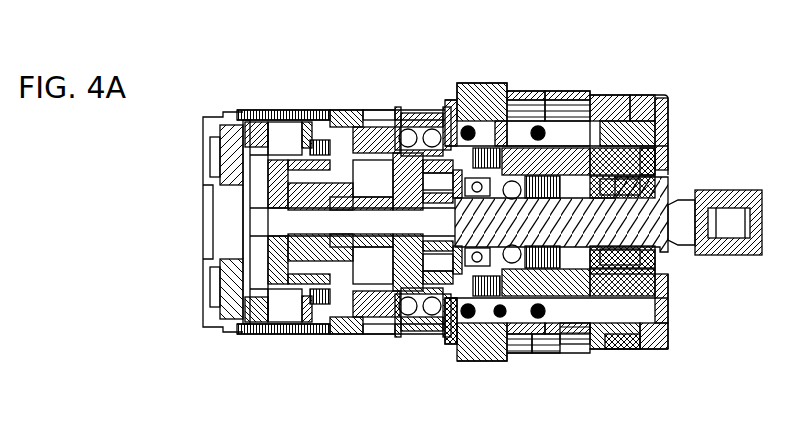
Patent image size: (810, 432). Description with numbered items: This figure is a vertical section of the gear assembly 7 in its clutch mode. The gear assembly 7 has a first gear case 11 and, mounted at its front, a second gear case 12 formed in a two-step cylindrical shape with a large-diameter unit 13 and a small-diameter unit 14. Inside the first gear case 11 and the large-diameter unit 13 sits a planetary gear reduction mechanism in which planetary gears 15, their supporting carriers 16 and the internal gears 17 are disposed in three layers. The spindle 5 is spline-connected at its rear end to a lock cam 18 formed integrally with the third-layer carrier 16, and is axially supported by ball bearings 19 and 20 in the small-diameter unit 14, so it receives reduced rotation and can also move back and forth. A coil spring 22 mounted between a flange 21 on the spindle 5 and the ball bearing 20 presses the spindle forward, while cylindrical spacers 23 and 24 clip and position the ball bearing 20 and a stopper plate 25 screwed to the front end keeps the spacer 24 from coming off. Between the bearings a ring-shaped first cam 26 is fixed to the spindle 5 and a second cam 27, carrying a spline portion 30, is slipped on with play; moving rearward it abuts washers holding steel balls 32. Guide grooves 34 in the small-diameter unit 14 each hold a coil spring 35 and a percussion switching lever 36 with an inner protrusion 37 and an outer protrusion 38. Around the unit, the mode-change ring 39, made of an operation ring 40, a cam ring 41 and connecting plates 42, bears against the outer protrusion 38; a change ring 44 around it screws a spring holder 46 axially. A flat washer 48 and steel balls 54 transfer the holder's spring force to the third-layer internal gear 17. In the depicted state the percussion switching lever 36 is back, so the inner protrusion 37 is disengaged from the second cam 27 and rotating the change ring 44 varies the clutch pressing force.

The spindle 5 is at (660, 97).
The gear assembly 7 is at (369, 62).
The first gear case 11 is at (272, 110).
The second gear case 12 is at (420, 107).
The large-diameter unit 13 is at (375, 113).
The small-diameter unit 14 is at (510, 88).
The planetary gears 15 is at (292, 335).
The carriers 16 is at (358, 337).
The internal gears 17 is at (252, 110).
The lock cam 18 is at (457, 353).
The ball bearing 19 is at (480, 367).
The ball bearing 20 is at (617, 357).
The flange 21 is at (680, 180).
The coil spring 22 is at (670, 273).
The cylindrical spacer 23 is at (602, 92).
The cylindrical spacer 24 is at (670, 162).
The stopper plate 25 is at (670, 325).
The first cam 26 is at (642, 98).
The second cam 27 is at (543, 110).
The spline portion 30 is at (538, 340).
The steel balls 32 is at (517, 363).
The guide grooves 34 is at (527, 97).
The coil spring 35 is at (502, 87).
The percussion switching lever 36 is at (582, 110).
The inner protrusion 37 is at (500, 360).
The outer protrusion 38 is at (620, 110).
The mode-change ring 39 is at (498, 78).
The operation ring 40 is at (457, 83).
The cam ring 41 is at (640, 360).
The connecting plates 42 is at (565, 92).
The change ring 44 is at (668, 100).
The spring holder 46 is at (558, 363).
The flat washer 48 is at (450, 110).
The steel balls 54 is at (402, 100).